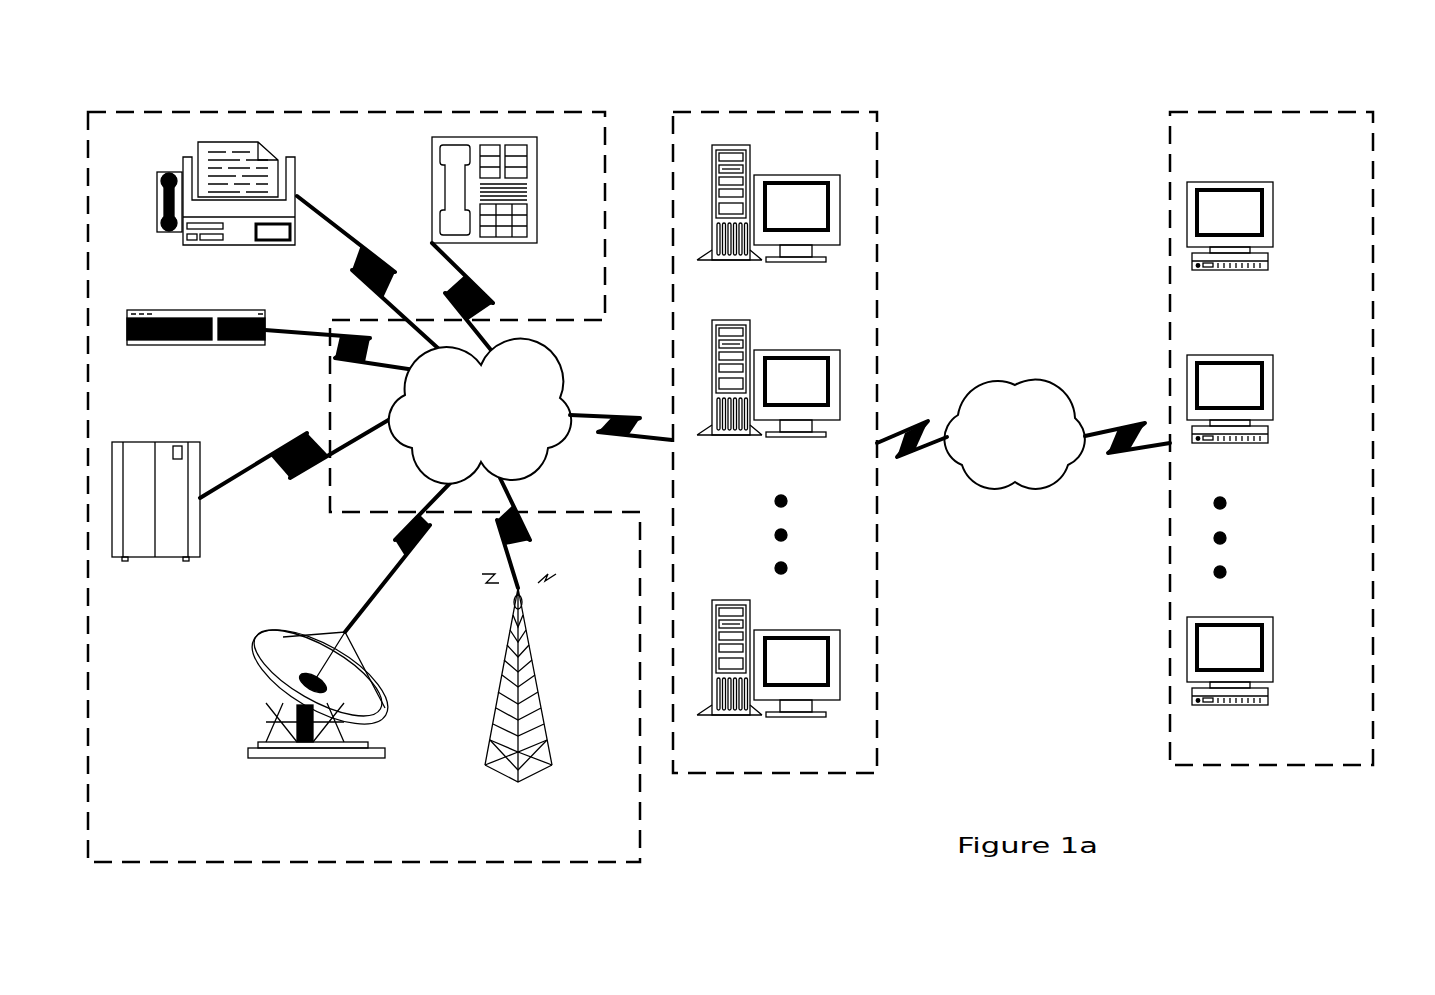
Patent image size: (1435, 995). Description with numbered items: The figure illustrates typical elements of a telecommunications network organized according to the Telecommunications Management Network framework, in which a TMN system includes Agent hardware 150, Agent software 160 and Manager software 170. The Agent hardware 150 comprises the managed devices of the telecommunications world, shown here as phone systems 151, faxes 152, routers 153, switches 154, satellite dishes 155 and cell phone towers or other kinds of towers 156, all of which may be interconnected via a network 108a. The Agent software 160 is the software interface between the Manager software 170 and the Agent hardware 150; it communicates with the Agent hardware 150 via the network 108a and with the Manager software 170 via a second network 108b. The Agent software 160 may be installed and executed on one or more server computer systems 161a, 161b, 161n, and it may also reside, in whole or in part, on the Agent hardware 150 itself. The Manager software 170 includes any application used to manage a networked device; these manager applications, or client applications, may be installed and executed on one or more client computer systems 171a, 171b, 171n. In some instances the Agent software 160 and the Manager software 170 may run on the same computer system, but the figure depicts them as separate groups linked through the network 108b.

The Agent hardware 150 is at (353, 112).
The phone systems 151 is at (457, 243).
The faxes 152 is at (168, 232).
The routers 153 is at (130, 345).
The switches 154 is at (123, 558).
The satellite dishes 155 is at (253, 755).
The towers 156 is at (488, 768).
The network 108a is at (457, 441).
The network 108b is at (991, 459).
The Agent software 160 is at (793, 112).
The server computer system 161a is at (703, 263).
The server computer system 161b is at (778, 396).
The server computer system 161n is at (778, 676).
The Manager software 170 is at (1292, 112).
The client computer system 171a is at (1198, 267).
The client computer system 171b is at (1269, 416).
The client computer system 171n is at (1269, 678).